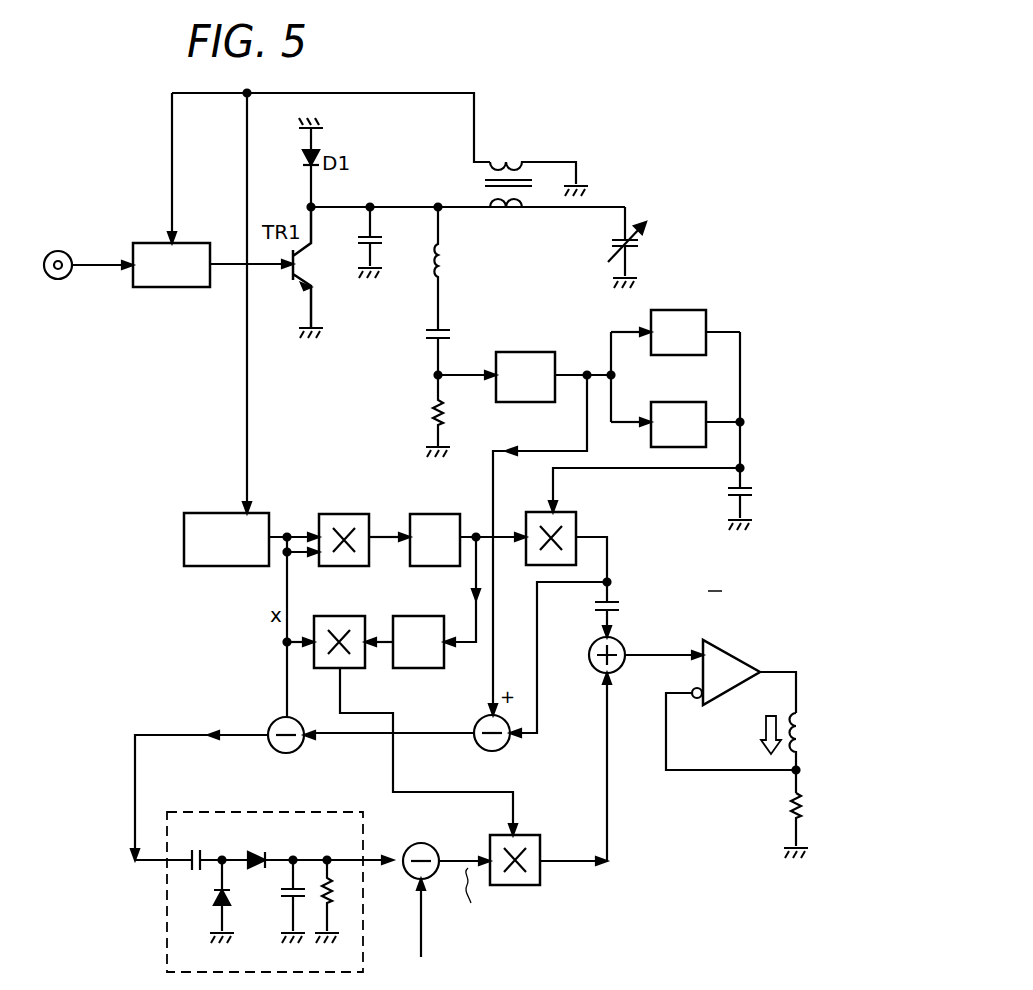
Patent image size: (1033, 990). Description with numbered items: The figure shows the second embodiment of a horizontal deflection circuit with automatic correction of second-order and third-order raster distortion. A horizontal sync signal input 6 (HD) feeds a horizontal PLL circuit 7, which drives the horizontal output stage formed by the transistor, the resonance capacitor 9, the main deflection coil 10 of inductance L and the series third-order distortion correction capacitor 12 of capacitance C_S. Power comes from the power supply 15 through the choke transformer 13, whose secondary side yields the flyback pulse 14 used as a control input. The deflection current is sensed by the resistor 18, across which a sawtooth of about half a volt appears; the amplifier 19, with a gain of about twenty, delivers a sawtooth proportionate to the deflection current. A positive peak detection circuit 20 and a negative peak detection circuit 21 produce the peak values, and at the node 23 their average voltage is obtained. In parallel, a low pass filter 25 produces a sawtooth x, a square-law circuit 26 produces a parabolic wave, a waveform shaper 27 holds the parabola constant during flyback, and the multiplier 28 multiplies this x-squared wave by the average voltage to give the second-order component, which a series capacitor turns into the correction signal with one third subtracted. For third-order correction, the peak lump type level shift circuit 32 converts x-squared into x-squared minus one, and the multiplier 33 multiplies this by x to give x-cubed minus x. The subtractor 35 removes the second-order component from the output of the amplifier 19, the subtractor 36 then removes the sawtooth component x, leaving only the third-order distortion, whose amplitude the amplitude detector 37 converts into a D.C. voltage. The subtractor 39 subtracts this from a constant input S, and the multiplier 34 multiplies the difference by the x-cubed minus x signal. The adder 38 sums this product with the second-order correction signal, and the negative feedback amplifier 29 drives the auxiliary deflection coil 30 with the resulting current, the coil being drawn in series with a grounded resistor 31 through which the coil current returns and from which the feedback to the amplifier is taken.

The horizontal sync signal input 6 is at (60, 250).
The horizontal PLL circuit 7 is at (203, 243).
The resonance capacitor 9 is at (355, 250).
The main deflection coil 10 is at (429, 250).
The third-order distortion correction capacitor 12 is at (418, 336).
The choke transformer for power supply 13 is at (510, 155).
The flyback pulse 14 is at (213, 93).
The power supply 15 is at (639, 246).
The resistor for detecting the deflection current 18 is at (418, 413).
The amplifier 19 is at (541, 352).
The positive peak detection circuit 20 is at (700, 310).
The negative peak detection circuit 21 is at (686, 402).
The node 23 is at (752, 448).
The low pass filter 25 is at (267, 513).
The square-law circuit 26 is at (361, 513).
The waveform shaper 27 is at (452, 513).
The multiplier 28 is at (562, 510).
The negative feedback amplifier 29 is at (740, 648).
The auxiliary deflection coil 30 is at (806, 733).
The resistor 31 is at (806, 808).
The peak lump type level shift circuit 32 is at (424, 616).
The multiplier 33 is at (345, 616).
The multiplier 34 is at (531, 834).
The subtractor 35 is at (503, 748).
The subtractor 36 is at (272, 722).
The amplitude detector 37 is at (343, 812).
The adder 38 is at (592, 640).
The subtractor 39 is at (433, 845).